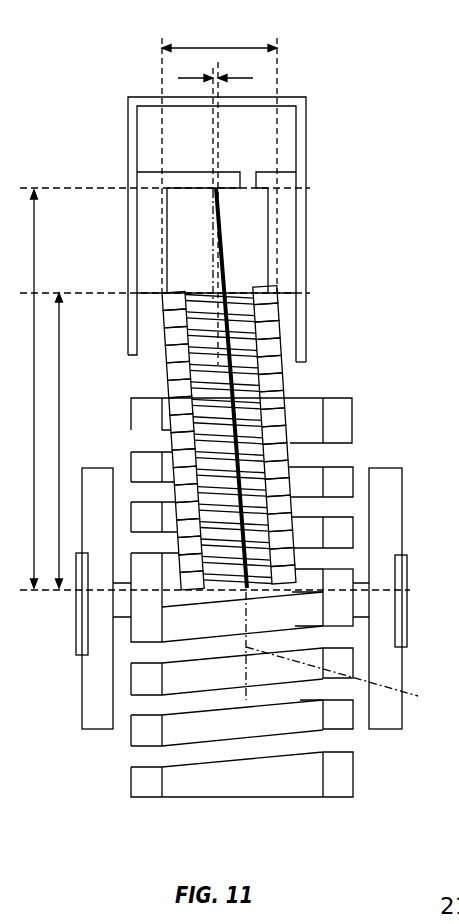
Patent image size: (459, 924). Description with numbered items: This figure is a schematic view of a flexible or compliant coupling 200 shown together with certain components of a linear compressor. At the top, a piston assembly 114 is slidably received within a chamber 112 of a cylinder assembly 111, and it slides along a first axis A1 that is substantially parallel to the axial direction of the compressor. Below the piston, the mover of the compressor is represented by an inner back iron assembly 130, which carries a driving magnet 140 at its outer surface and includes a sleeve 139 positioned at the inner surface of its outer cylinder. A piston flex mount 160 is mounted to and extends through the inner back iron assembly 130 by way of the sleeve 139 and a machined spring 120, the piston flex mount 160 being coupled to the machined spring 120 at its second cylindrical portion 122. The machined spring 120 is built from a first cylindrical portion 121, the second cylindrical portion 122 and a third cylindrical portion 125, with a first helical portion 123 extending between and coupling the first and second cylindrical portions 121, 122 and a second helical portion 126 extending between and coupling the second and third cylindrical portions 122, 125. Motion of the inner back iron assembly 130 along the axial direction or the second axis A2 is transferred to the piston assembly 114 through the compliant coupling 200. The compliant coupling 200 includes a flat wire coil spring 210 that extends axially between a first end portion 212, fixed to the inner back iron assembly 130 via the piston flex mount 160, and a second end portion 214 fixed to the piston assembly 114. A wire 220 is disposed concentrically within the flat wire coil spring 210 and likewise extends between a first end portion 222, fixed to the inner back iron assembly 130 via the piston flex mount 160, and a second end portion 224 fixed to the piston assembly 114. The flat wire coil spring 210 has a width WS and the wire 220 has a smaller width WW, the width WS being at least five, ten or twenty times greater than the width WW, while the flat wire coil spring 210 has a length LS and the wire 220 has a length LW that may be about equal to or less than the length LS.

The chamber 112 is at (150, 130).
The piston assembly 114 is at (287, 248).
The cylinder assembly 111 is at (300, 312).
The second end portion 224 is at (224, 192).
The wire 220 is at (223, 238).
The first end portion 222 is at (241, 592).
The second end portion 214 is at (161, 291).
The flat wire coil spring 210 is at (218, 465).
The first end portion 212 is at (262, 576).
The compliant coupling 200 is at (243, 465).
The first cylindrical portion 121 is at (345, 408).
The first helical portion 123 is at (340, 528).
The piston flex mount 160 is at (290, 562).
The sleeve 139 is at (362, 596).
The driving magnet 140 is at (78, 600).
The second cylindrical portion 122 is at (342, 620).
The second helical portion 126 is at (340, 723).
The third cylindrical portion 125 is at (337, 790).
The inner back iron assembly 130 is at (90, 717).
The machined spring 120 is at (249, 605).
The first axis A1 is at (190, 352).
The second axis A2 is at (349, 654).
The width of flat wire coil spring WS is at (212, 48).
The width of wire WW is at (240, 78).
The length of flat wire coil spring LS is at (60, 410).
The length of wire LW is at (34, 393).